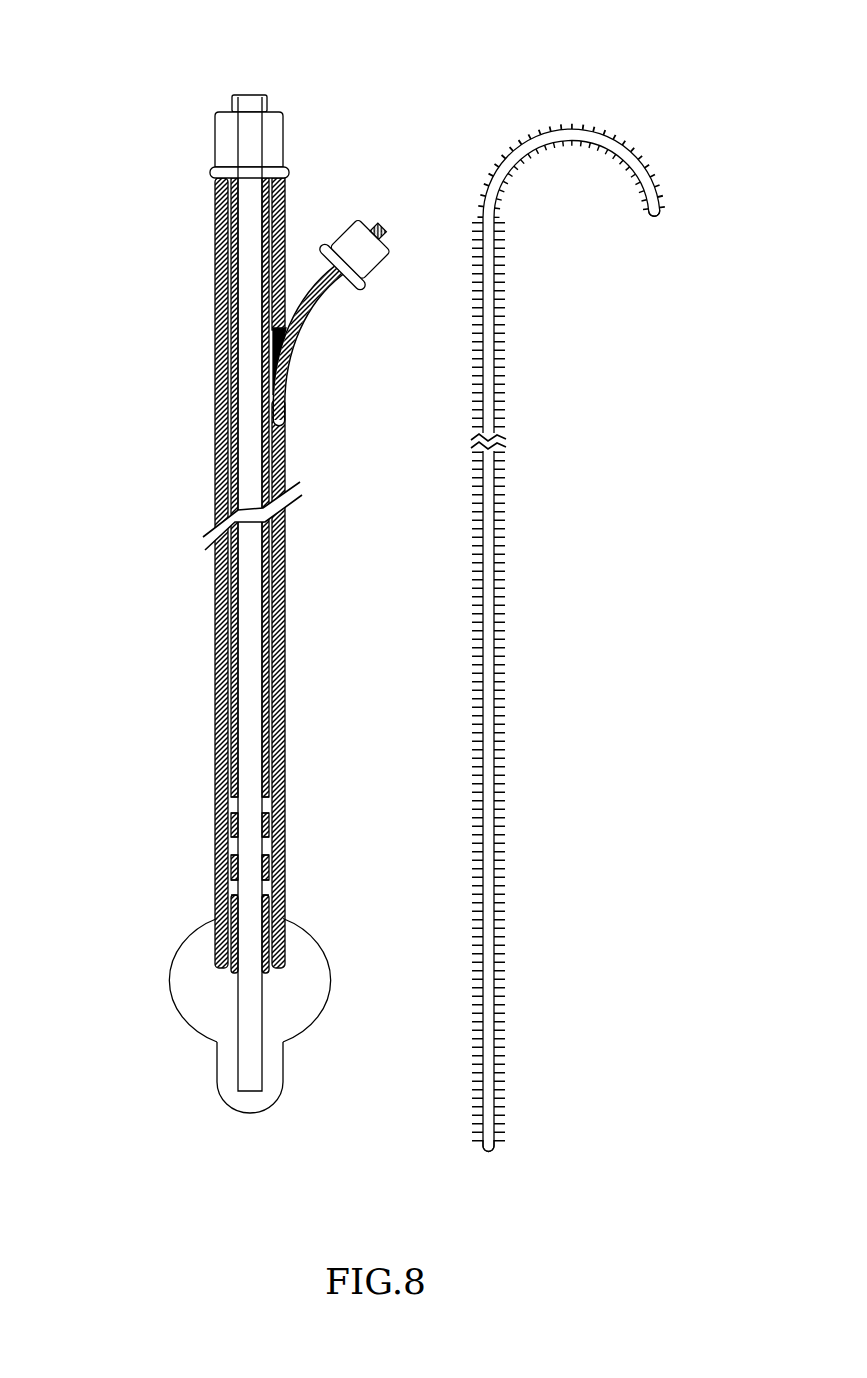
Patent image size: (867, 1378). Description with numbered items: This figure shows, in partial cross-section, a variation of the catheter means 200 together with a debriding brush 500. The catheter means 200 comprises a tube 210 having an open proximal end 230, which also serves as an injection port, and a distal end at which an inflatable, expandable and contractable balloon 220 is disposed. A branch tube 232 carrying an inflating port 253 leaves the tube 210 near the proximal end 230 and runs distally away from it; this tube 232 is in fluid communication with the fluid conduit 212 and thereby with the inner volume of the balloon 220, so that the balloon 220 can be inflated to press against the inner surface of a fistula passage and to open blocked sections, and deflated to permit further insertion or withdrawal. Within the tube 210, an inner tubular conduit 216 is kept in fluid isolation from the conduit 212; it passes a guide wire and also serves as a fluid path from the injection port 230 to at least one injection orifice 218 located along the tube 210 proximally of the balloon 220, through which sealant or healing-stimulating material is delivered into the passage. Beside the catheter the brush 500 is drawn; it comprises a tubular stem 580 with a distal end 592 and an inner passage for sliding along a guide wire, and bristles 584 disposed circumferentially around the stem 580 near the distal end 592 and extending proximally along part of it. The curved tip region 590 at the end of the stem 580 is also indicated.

The catheter means 200 is at (130, 309).
The tube 210 is at (285, 647).
The fluid conduit 212 is at (285, 737).
The inner tubular conduit 216 is at (248, 491).
The injection orifice 218 is at (220, 887).
The balloon 220 is at (170, 980).
The proximal end / injection port 230 is at (247, 93).
The tube 232 is at (312, 320).
The inflating port 253 is at (378, 218).
The brush 500 is at (665, 316).
The tubular stem 580 is at (557, 128).
The bristles 584 is at (496, 408).
The tip end 590 is at (663, 220).
The distal end 592 is at (488, 1153).